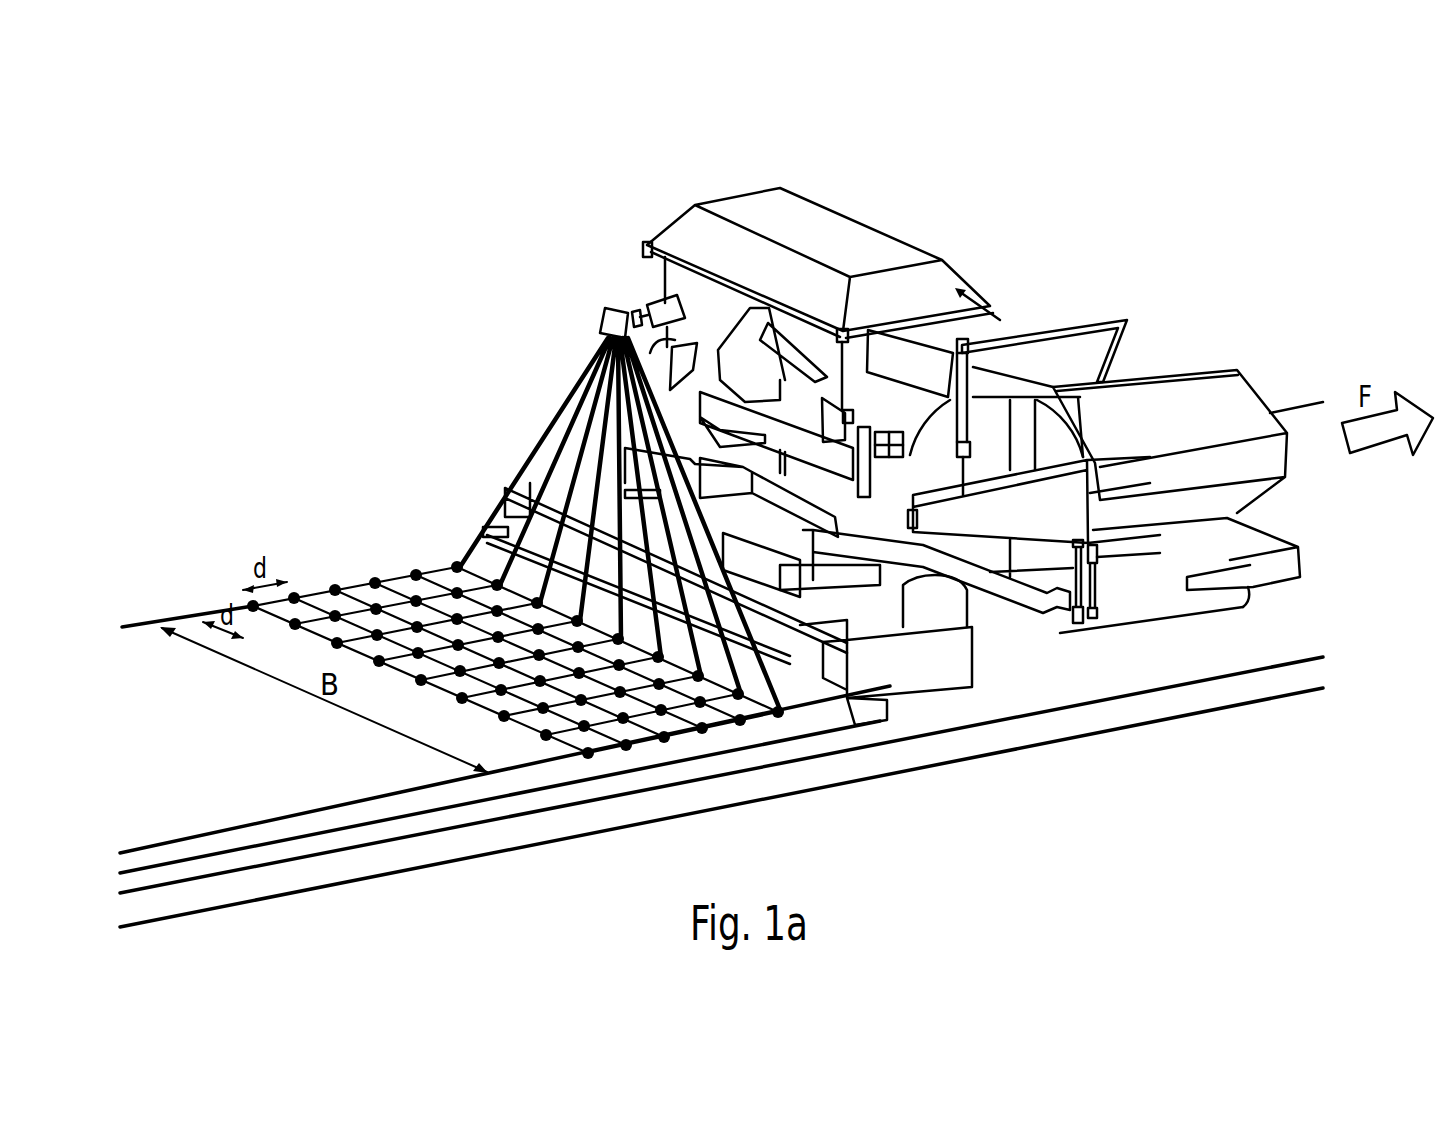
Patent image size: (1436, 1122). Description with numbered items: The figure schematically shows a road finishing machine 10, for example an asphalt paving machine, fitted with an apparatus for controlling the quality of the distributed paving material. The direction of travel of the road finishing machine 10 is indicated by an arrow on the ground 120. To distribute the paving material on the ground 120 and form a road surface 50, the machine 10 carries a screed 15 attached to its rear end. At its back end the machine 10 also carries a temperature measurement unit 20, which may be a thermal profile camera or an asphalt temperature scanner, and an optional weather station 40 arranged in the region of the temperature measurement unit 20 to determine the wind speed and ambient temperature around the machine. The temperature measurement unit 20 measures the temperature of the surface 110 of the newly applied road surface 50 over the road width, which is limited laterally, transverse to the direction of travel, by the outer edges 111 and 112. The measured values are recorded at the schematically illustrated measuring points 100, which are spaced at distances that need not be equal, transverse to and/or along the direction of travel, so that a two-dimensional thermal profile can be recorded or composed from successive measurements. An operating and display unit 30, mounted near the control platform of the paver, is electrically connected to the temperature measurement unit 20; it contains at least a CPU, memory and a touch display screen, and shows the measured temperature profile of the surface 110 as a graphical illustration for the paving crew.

The road finishing machine 10 is at (1130, 194).
The screed 15 is at (812, 622).
The temperature measurement unit 20 is at (596, 316).
The operating and display unit 30 is at (917, 362).
The weather station 40 is at (658, 305).
The road surface 50 is at (425, 801).
The measuring points 100 is at (383, 576).
The surface of the newly applied road surface 110 is at (200, 699).
The outer edge 111 is at (130, 623).
The outer edge 112 is at (137, 845).
The ground 120 is at (1292, 648).